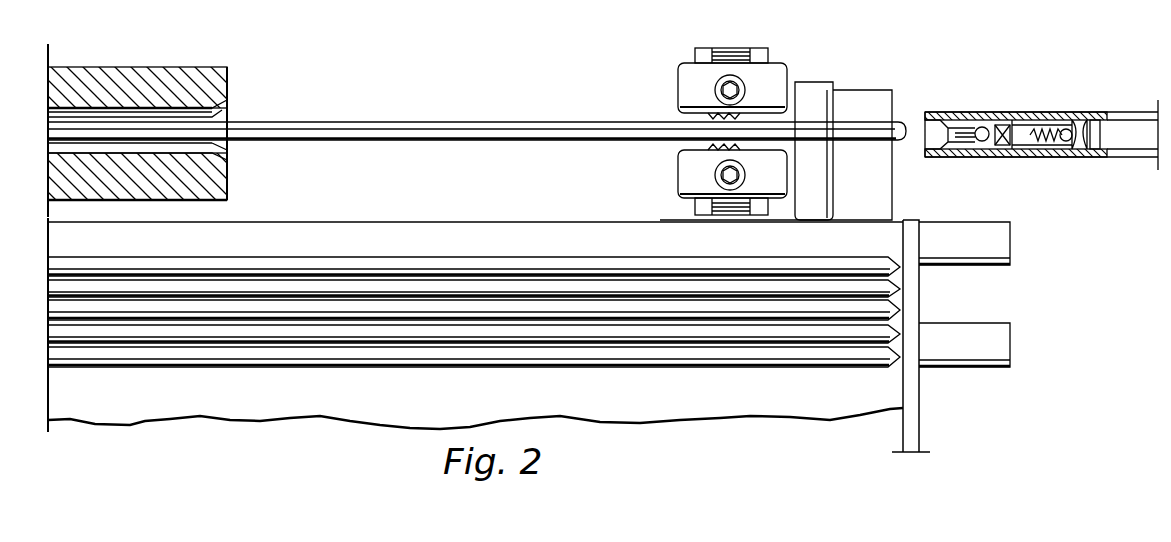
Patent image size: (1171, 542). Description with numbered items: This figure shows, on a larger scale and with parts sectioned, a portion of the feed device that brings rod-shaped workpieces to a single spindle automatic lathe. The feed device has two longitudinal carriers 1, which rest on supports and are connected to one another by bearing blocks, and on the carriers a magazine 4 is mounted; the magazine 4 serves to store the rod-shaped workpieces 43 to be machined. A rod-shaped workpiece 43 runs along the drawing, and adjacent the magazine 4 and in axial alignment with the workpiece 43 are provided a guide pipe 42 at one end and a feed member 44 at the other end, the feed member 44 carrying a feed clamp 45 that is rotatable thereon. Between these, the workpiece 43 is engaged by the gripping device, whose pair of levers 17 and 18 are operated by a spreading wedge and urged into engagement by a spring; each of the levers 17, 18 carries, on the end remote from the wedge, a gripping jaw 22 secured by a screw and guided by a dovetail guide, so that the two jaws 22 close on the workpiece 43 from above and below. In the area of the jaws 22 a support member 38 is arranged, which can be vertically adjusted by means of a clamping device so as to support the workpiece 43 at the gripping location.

The longitudinal carriers 1 is at (1000, 333).
The magazine 4 is at (272, 402).
The lever 17 is at (706, 210).
The lever 18 is at (706, 56).
The gripping jaw 22 is at (776, 76).
The support member 38 is at (825, 100).
The guide pipe 42 is at (174, 75).
The rod-shaped workpiece 43 is at (438, 124).
The feed member 44 is at (1126, 120).
The feed clamp 45 is at (976, 112).